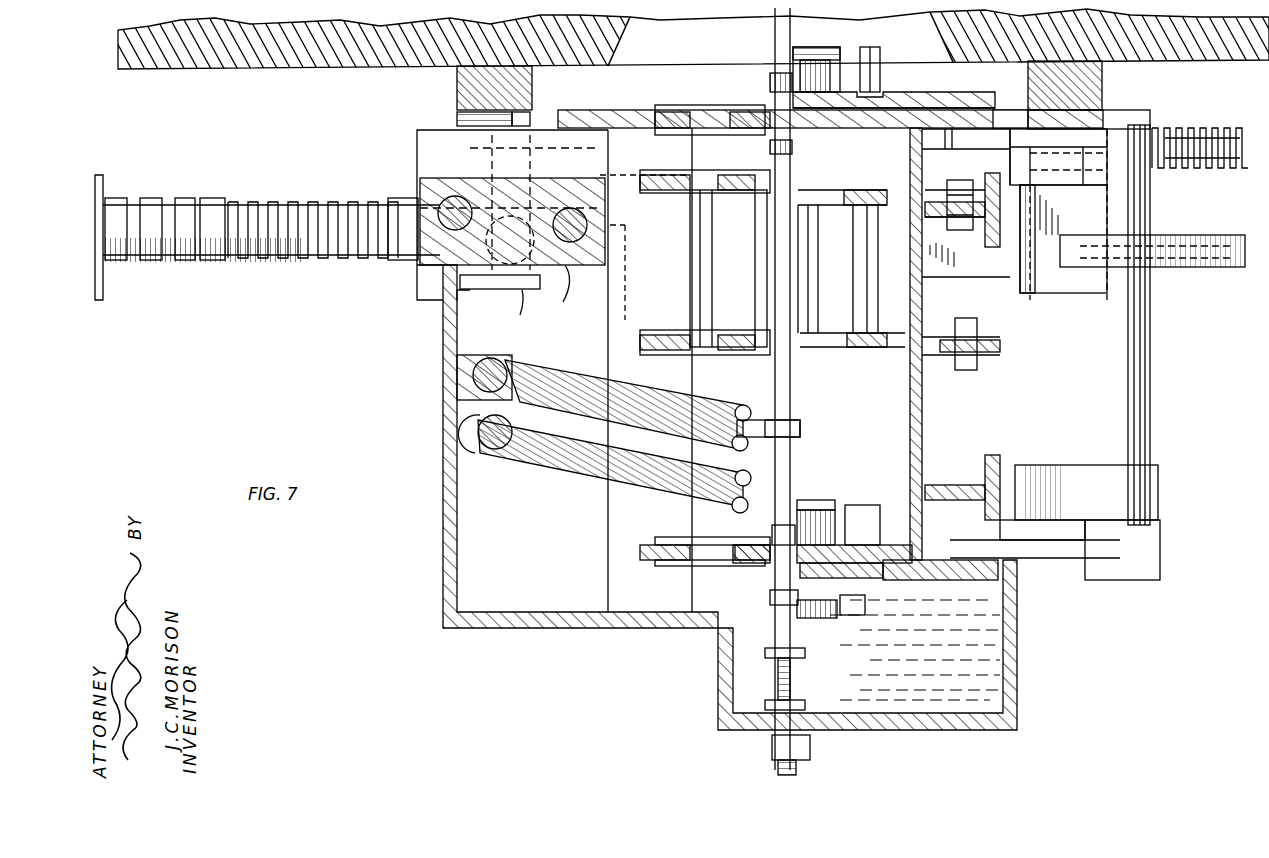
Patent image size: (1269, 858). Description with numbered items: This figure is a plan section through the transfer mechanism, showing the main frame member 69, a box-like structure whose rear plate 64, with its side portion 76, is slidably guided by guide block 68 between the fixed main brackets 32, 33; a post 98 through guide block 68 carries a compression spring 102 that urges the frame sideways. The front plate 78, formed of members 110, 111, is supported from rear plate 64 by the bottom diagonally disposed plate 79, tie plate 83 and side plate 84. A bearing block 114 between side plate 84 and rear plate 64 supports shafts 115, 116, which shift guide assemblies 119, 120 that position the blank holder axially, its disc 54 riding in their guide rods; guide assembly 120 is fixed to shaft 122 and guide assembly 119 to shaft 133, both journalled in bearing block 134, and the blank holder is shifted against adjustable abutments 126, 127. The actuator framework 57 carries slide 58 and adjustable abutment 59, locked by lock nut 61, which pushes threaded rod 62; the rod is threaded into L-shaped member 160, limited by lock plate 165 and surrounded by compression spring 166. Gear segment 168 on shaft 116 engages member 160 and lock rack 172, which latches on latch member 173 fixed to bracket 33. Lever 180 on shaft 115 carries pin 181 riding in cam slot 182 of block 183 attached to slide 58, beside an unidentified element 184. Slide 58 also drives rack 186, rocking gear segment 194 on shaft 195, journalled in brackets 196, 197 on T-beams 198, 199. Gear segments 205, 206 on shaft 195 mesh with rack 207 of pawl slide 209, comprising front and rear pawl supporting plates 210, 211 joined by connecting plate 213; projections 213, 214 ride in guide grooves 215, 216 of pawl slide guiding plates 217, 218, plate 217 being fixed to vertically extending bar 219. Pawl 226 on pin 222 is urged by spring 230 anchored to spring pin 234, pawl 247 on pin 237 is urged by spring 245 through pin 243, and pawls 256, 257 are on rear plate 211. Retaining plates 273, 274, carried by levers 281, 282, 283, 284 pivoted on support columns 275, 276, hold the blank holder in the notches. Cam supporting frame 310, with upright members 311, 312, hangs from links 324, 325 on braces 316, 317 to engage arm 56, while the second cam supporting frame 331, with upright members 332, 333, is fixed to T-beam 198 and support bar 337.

The main bracket 32 is at (1102, 82).
The main bracket 33 is at (457, 84).
The disc 54 is at (760, 420).
The arm 56 is at (760, 292).
The actuator framework 57 is at (100, 185).
The slide 58 is at (290, 268).
The adjustable abutment 59 is at (150, 200).
The lock nut 61 is at (115, 200).
The threaded rod 62 is at (175, 205).
The main rear plate 64 is at (592, 116).
The guide block 68 is at (1105, 130).
The main frame member 69 is at (440, 480).
The side portion 76 is at (1010, 107).
The front plate 78 is at (985, 732).
The bottom diagonally disposed plate 79 is at (1010, 665).
The tie plate 83 is at (608, 520).
The side plate 84 is at (443, 568).
The post 98 is at (1228, 125).
The compression spring 102 is at (1200, 165).
The member 110 is at (895, 728).
The member 111 is at (515, 622).
The bearing block 114 is at (430, 282).
The shaft 115 is at (440, 200).
The shaft 116 is at (580, 290).
The guide assembly 119 is at (752, 476).
The guide assembly 120 is at (752, 450).
The shaft 122 is at (498, 366).
The adjustable abutment 126 is at (800, 652).
The adjustable abutment 127 is at (795, 700).
The shaft 133 is at (496, 448).
The bearing block 134 is at (457, 378).
The L-shaped member 160 is at (450, 170).
The lock plate 165 is at (440, 215).
The compression spring 166 is at (265, 205).
The gear segment 168 is at (608, 228).
The lock rack 172 is at (532, 120).
The latch member 173 is at (465, 118).
The lever 180 is at (500, 300).
The pin 181 is at (504, 332).
The cam slot 182 is at (541, 332).
The block 183 is at (531, 308).
The bracket 184 is at (440, 312).
The rack 186 is at (1240, 268).
The gear segment 194 is at (1172, 268).
The shaft 195 is at (1145, 352).
The bracket 196 is at (1060, 275).
The bracket 197 is at (1060, 490).
The T-beam 198 is at (990, 250).
The T-beam 199 is at (1000, 460).
The gear segment 205 is at (1015, 143).
The gear segment 206 is at (1055, 560).
The rack 207 is at (930, 142).
The pawl slide 209 is at (926, 440).
The front pawl supporting plate 210 is at (865, 578).
The rear pawl supporting plate 211 is at (900, 118).
The connecting plate 213 is at (922, 306).
The projection 214 is at (875, 92).
The guide groove 215 is at (870, 562).
The guide groove 216 is at (870, 108).
The pawl slide guiding plate 217 is at (948, 582).
The pawl slide guiding plate 218 is at (962, 100).
The vertically extending bar 219 is at (1000, 585).
The pawl supporting pin 222 is at (818, 500).
The pawl 226 is at (772, 532).
The spring 230 is at (852, 510).
The spring pin 234 is at (884, 500).
The pawl supporting pin 237 is at (810, 620).
The pin 243 is at (885, 605).
The spring 245 is at (858, 615).
The pawl 247 is at (770, 596).
The pawl 256 is at (772, 148).
The pawl 257 is at (770, 80).
The retaining plate 273 is at (760, 565).
The retaining plate 274 is at (732, 112).
The support column 275 is at (640, 552).
The support column 276 is at (648, 112).
The lever 281 is at (700, 540).
The lever 282 is at (700, 564).
The lever 283 is at (695, 128).
The lever 284 is at (700, 105).
The cam supporting frame 310 is at (718, 298).
The upright member 311 is at (760, 352).
The upright member 312 is at (770, 185).
The brace 316 is at (642, 345).
The brace 317 is at (670, 166).
The link 324 is at (742, 195).
The link 325 is at (679, 216).
The second cam supporting frame 331 is at (870, 246).
The upright member 332 is at (835, 205).
The upright member 333 is at (856, 334).
The support bar 337 is at (1000, 351).